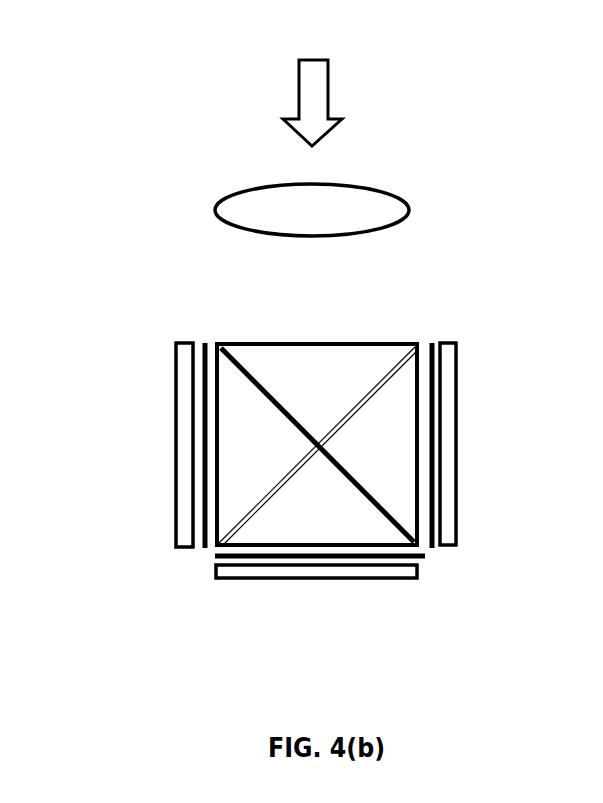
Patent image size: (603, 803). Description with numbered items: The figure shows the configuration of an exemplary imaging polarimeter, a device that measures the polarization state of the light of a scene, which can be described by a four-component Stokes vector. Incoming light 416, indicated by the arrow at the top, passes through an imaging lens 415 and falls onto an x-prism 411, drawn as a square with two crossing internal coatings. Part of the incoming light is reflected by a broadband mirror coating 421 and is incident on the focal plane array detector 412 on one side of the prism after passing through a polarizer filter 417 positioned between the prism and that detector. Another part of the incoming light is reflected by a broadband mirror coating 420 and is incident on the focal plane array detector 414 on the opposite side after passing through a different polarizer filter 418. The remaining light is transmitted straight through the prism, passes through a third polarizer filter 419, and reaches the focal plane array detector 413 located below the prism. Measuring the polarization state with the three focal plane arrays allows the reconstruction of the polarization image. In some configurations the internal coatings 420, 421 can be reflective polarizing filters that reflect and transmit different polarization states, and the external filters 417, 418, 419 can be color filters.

The x-prism 411 is at (350, 343).
The focal plane array detector 412 is at (176, 470).
The focal plane array detector 413 is at (340, 590).
The focal plane array detector 414 is at (456, 420).
The imaging lens 415 is at (245, 196).
The incoming light 416 is at (299, 99).
The polarizer filter 417 is at (205, 343).
The polarizer filter 418 is at (432, 550).
The third polarizer filter 419 is at (215, 556).
The broadband mirror coating 420 is at (245, 368).
The broadband mirror coating 421 is at (250, 520).